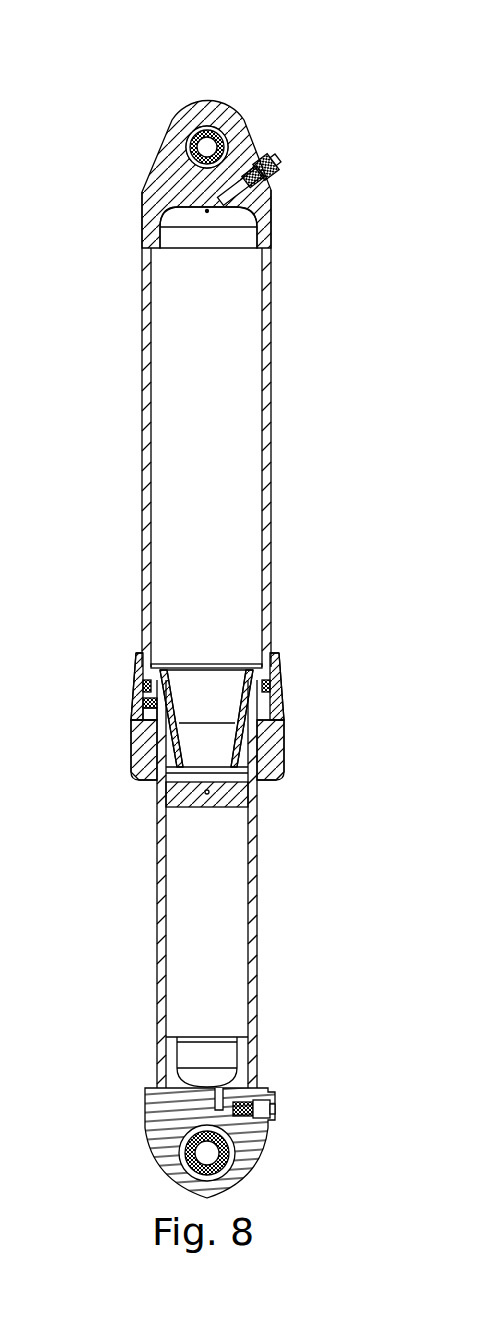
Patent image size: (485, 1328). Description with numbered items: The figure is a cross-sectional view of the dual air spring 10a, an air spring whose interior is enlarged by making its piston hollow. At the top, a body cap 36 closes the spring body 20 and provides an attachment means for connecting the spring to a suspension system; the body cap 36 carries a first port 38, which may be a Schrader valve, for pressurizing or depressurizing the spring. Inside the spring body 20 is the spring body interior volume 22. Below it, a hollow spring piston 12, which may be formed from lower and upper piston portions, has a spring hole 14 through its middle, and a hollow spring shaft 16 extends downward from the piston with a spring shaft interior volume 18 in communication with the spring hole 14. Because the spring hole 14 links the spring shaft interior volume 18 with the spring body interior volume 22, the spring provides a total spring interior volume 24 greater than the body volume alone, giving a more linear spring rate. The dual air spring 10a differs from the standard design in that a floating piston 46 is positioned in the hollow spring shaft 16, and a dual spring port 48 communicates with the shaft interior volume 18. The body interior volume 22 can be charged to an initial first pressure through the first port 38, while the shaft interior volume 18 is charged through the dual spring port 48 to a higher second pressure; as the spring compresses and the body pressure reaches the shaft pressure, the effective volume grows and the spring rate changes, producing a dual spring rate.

The dual air spring 10a is at (170, 62).
The body cap 36 is at (176, 152).
The first port 38 is at (274, 170).
The spring body 20 is at (272, 405).
The spring body interior volume 22 is at (195, 444).
The total spring interior volume 24 is at (108, 657).
The spring hole 14 is at (248, 713).
The spring piston 12 is at (152, 705).
The floating piston 46 is at (237, 800).
The spring shaft 16 is at (256, 930).
The spring shaft interior volume 18 is at (196, 949).
The dual spring port 48 is at (277, 1108).